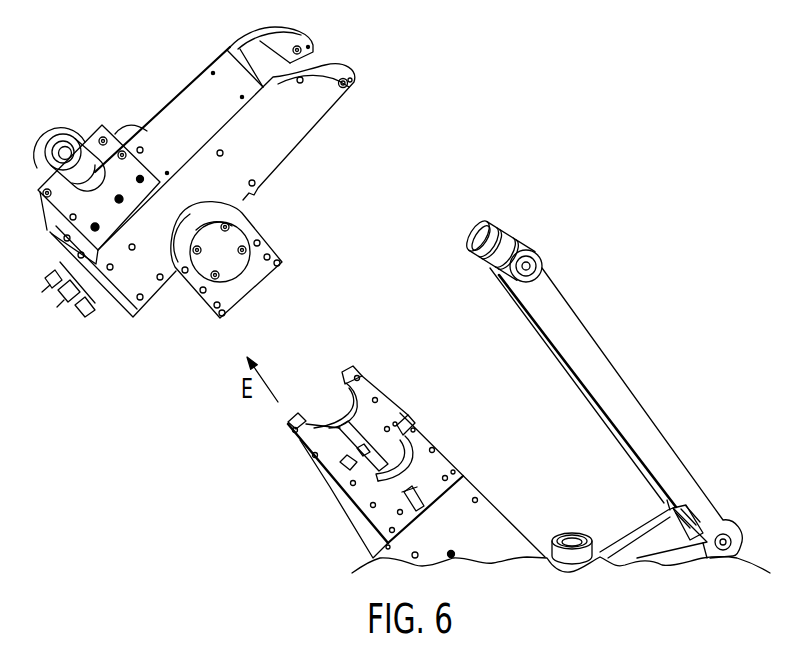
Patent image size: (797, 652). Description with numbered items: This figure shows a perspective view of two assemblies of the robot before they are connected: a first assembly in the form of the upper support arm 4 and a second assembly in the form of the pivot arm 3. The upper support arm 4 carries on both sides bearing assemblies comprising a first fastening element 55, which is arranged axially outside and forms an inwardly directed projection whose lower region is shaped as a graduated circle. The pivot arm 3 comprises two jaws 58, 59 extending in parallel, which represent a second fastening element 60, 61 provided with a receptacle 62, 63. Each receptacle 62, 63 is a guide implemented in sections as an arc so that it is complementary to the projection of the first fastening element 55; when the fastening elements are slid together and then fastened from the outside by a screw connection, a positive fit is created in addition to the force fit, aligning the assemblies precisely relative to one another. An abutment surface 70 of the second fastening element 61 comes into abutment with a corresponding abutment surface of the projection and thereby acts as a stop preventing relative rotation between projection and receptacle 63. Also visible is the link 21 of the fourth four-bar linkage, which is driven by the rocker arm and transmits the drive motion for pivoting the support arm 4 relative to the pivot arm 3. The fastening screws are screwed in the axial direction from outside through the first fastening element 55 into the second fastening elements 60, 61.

The upper support arm 4 is at (183, 100).
The first fastening element 55 is at (253, 280).
The link 21 is at (610, 383).
The pivot arm 3 is at (495, 548).
The jaw 58 is at (389, 381).
The second fastening element 60 is at (370, 392).
The jaw 59 is at (416, 485).
The second fastening element 61 is at (442, 463).
The receptacle 62 is at (335, 418).
The receptacle 63 is at (425, 434).
The abutment surface 70 is at (405, 418).